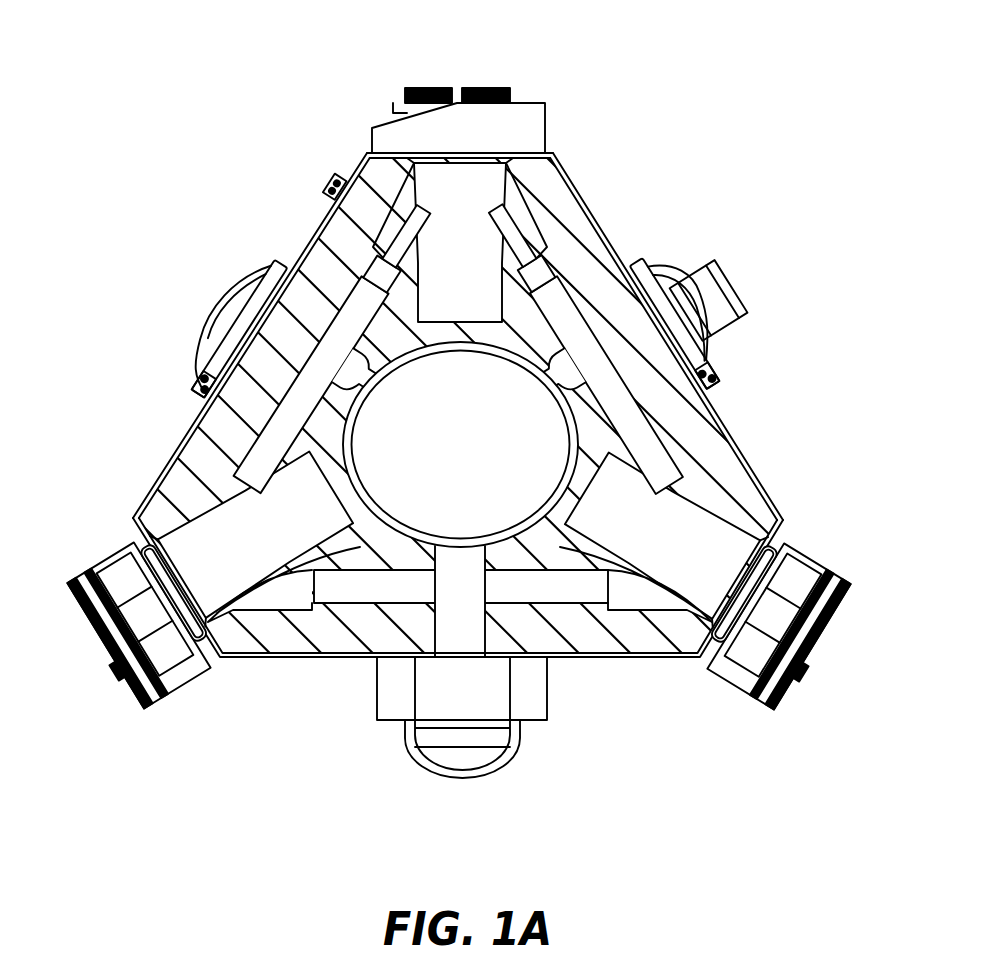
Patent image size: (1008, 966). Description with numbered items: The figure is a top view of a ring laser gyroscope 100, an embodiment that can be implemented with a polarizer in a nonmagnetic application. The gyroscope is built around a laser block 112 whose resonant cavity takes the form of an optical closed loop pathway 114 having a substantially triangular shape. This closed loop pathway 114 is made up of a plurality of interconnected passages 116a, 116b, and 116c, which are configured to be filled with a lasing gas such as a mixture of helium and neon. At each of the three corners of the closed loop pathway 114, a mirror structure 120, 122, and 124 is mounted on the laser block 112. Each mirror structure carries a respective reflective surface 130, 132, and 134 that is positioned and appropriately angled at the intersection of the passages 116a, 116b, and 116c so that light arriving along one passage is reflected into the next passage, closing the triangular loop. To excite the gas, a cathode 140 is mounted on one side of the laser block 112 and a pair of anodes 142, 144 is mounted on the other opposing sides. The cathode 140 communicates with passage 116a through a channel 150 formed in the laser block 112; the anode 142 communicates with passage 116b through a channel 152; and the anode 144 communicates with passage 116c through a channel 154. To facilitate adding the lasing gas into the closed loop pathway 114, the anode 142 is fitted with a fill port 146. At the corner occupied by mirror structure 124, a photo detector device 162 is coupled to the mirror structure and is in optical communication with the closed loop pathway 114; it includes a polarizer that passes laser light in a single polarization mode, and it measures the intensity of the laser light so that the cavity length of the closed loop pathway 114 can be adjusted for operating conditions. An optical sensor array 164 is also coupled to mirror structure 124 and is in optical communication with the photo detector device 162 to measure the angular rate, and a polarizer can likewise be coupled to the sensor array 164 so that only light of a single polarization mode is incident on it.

The ring laser gyroscope 100 is at (832, 222).
The laser block 112 is at (295, 247).
The optical closed loop pathway 114 is at (745, 515).
The passage 116a is at (578, 590).
The passage 116b is at (650, 457).
The passage 116c is at (228, 486).
The mirror structure 120 is at (200, 668).
The mirror structure 122 is at (710, 670).
The mirror structure 124 is at (548, 136).
The reflective surface 130 is at (195, 617).
The reflective surface 132 is at (713, 613).
The reflective surface 134 is at (437, 163).
The cathode 140 is at (397, 722).
The anode 142 is at (655, 270).
The anode 144 is at (243, 293).
The fill port 146 is at (740, 297).
The channel 150 is at (473, 580).
The channel 152 is at (572, 372).
The channel 154 is at (348, 382).
The photo detector device 162 is at (430, 88).
The optical sensor array 164 is at (478, 88).